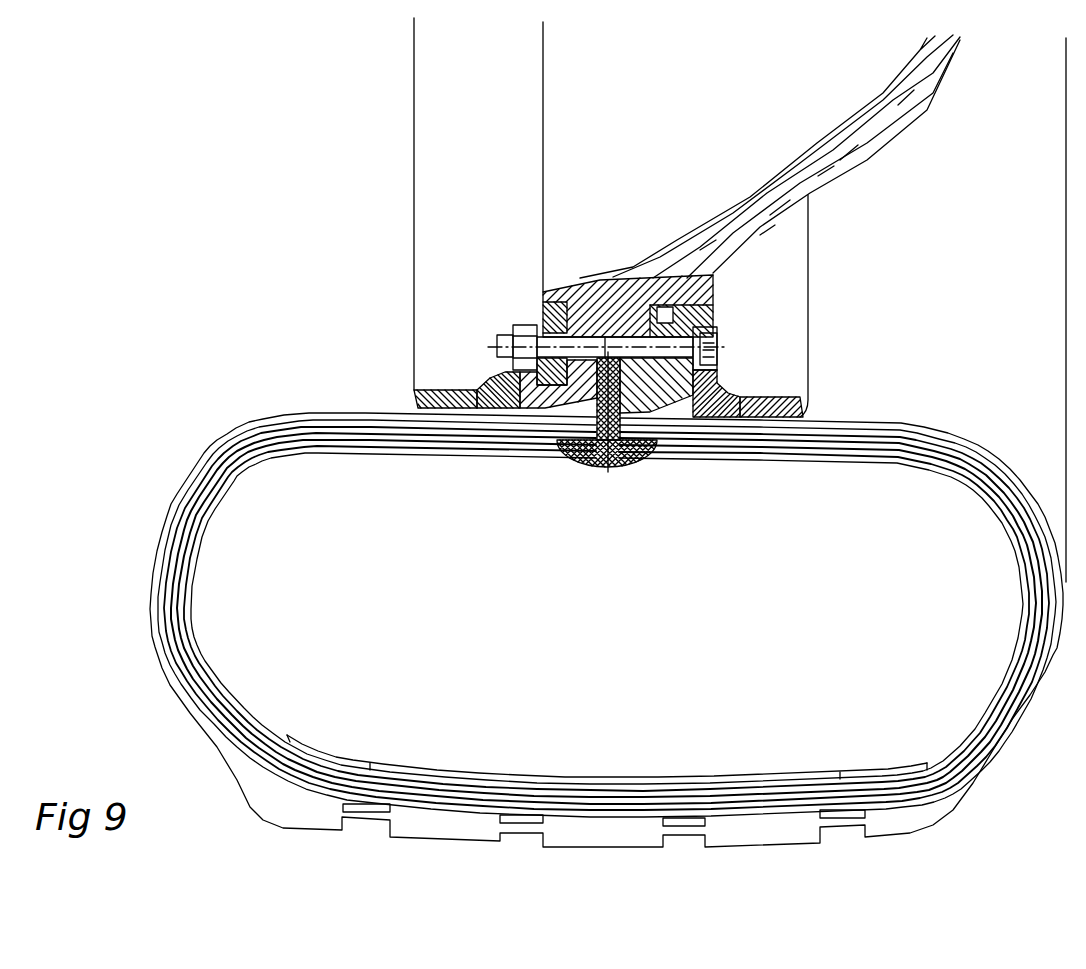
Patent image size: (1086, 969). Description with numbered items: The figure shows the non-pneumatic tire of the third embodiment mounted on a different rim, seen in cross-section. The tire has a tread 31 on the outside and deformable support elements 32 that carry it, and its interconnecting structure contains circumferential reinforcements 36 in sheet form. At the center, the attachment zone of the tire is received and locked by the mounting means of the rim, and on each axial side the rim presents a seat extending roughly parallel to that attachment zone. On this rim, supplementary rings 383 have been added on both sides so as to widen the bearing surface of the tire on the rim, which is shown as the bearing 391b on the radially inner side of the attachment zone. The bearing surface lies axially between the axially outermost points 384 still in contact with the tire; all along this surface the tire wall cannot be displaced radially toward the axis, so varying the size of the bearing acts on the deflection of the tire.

The tread 31 is at (313, 826).
The support elements 32 is at (166, 640).
The circumferential reinforcements 36 is at (370, 812).
The supplementary rings 383 is at (453, 390).
The axially outermost point 384 is at (430, 420).
The bearing 391b is at (466, 407).